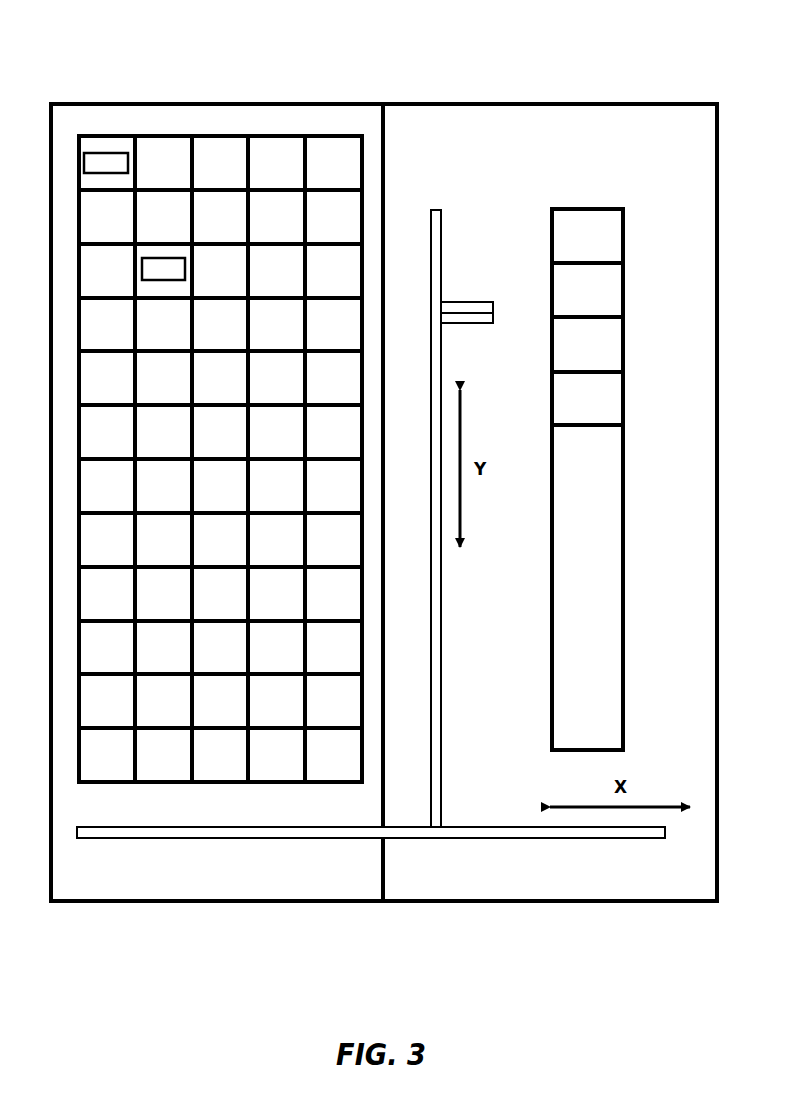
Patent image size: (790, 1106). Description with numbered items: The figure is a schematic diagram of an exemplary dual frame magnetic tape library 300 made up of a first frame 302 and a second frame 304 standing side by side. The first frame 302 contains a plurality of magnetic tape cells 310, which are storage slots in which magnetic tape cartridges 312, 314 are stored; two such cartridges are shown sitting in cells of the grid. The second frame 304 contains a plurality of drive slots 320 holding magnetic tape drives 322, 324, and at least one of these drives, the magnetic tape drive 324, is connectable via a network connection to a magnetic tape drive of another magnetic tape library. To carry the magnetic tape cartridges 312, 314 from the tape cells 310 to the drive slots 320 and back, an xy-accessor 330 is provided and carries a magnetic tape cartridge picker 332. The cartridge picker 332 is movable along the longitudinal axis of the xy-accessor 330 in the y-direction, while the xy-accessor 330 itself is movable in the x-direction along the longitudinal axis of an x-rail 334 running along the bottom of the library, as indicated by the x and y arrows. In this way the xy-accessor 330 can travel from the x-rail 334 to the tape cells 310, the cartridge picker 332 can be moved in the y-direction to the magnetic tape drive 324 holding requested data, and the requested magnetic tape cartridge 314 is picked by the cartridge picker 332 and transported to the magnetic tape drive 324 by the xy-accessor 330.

The dual frame magnetic tape library 300 is at (456, 84).
The first frame 302 is at (247, 103).
The second frame 304 is at (561, 103).
The magnetic tape cells 310 is at (203, 135).
The magnetic tape cartridge 312 is at (119, 152).
The magnetic tape cartridge 314 is at (186, 275).
The drive slots 320 is at (625, 614).
The magnetic tape drive 322 is at (614, 406).
The magnetic tape drive 324 is at (614, 245).
The xy-accessor 330 is at (442, 632).
The magnetic tape cartridge picker 332 is at (452, 302).
The x-rail 334 is at (527, 827).